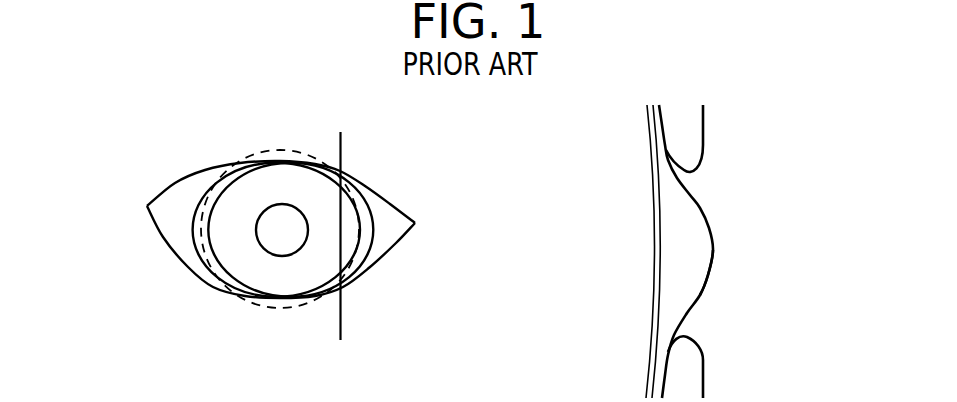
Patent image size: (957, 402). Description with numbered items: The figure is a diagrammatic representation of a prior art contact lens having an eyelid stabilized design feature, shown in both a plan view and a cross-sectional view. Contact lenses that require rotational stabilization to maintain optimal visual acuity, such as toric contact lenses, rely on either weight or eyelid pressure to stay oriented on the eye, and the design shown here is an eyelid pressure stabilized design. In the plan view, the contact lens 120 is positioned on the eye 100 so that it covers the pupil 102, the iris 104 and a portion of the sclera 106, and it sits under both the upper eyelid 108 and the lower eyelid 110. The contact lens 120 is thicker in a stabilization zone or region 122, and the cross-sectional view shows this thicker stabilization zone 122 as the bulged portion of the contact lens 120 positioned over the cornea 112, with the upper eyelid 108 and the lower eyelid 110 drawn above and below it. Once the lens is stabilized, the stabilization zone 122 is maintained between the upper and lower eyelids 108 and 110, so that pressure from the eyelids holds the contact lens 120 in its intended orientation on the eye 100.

The eye 100 is at (85, 310).
The pupil 102 is at (290, 217).
The iris 104 is at (288, 287).
The sclera 106 is at (183, 250).
The upper eyelid 108 is at (208, 173).
The lower eyelid 110 is at (368, 272).
The cornea 112 is at (653, 245).
The contact lens 120 is at (199, 278).
The stabilization zone 122 is at (703, 290).